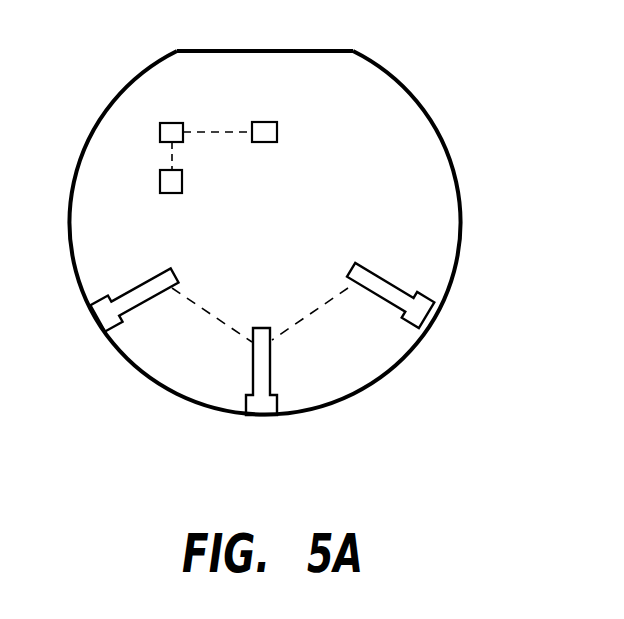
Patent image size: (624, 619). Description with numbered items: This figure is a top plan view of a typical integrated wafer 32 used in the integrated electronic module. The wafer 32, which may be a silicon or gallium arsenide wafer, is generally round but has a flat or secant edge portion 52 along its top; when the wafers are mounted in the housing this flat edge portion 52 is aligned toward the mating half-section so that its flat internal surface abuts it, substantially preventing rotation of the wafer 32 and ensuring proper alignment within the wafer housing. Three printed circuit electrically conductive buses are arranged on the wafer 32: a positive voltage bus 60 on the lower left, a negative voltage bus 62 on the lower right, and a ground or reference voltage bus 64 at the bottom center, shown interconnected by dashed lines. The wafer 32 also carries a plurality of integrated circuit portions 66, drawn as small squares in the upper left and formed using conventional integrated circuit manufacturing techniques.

The integrated wafer 32 is at (395, 137).
The flat or secant edge portion 52 is at (198, 50).
The positive voltage bus 60 is at (110, 315).
The negative voltage bus 62 is at (407, 292).
The ground or reference voltage bus 64 is at (263, 377).
The integrated circuit portions 66 is at (171, 125).